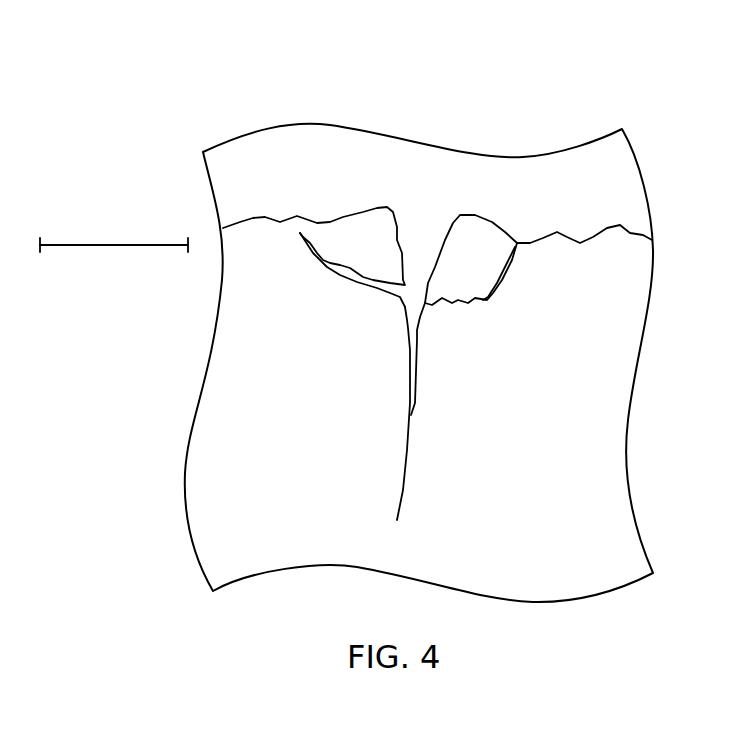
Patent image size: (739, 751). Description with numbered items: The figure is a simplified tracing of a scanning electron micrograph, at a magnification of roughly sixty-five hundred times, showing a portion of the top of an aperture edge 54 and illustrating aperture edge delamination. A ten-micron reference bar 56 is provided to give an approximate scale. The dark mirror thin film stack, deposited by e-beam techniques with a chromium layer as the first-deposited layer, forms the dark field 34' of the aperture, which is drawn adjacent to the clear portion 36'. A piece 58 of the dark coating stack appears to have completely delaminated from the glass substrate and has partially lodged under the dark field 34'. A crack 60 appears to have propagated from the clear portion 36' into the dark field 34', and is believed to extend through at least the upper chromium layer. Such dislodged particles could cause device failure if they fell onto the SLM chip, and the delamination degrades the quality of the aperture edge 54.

The aperture edge 54 is at (640, 89).
The reference bar 56 is at (122, 240).
The piece of the dark coating stack 58 is at (460, 215).
The crack 60 is at (418, 357).
The dark field 34' is at (435, 332).
The clear portion 36' is at (437, 230).